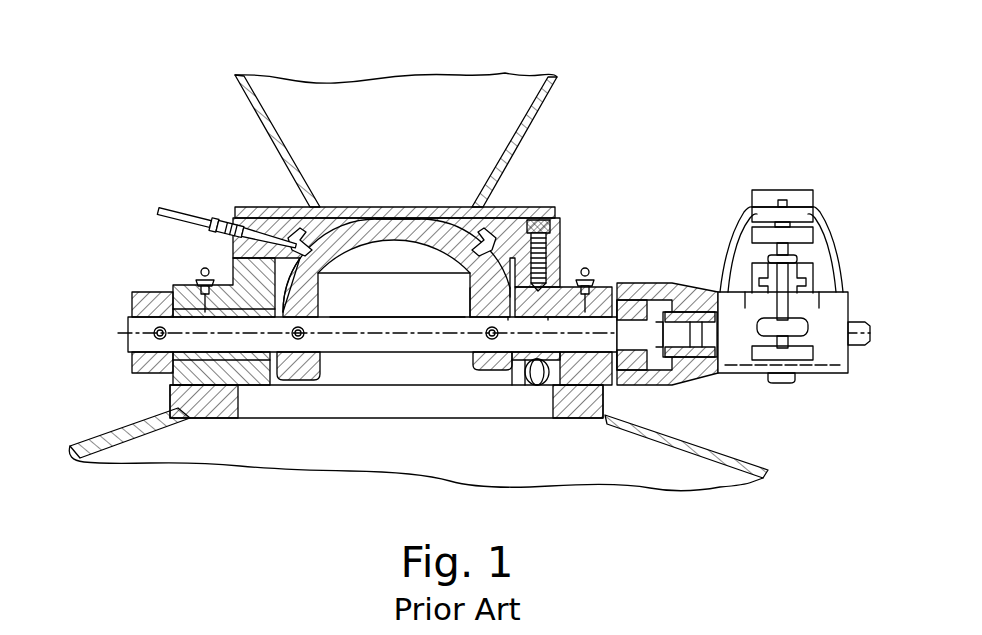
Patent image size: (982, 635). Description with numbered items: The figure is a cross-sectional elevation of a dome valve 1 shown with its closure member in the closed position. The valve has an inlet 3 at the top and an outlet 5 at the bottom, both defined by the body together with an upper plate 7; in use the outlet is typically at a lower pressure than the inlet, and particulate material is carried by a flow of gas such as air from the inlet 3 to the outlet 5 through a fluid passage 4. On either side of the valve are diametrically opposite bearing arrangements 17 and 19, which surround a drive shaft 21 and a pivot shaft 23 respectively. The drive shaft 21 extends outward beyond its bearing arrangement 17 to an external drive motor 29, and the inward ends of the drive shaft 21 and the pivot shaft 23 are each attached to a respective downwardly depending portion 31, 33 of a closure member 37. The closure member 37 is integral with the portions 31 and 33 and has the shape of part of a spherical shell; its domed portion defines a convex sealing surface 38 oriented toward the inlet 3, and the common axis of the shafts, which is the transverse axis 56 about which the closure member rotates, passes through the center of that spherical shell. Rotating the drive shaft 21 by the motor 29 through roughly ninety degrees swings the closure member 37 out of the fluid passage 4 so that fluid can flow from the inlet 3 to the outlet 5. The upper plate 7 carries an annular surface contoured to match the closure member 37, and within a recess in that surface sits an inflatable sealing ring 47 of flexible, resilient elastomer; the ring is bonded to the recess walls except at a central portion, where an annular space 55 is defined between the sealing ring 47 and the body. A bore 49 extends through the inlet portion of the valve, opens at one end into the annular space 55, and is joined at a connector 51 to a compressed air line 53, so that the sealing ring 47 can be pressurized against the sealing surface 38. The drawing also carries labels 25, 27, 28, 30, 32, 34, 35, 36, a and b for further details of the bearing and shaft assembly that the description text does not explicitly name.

The dome valve 1 is at (455, 279).
The inlet 3 is at (285, 108).
The fluid passage 4 is at (399, 352).
The outlet 5 is at (256, 121).
The upper plate 7 is at (565, 240).
The bearing arrangement 17 is at (608, 412).
The bearing arrangement 19 is at (242, 366).
The drive shaft 21 is at (490, 338).
The pivot shaft 23 is at (320, 338).
The seal 25 is at (546, 378).
The shaft bushing 27 is at (261, 368).
The bearing block 28 is at (528, 318).
The drive motor 29 is at (746, 370).
The spacer 30 is at (526, 360).
The downwardly depending portion 31 is at (476, 358).
The fastening bolt 32 is at (200, 290).
The downwardly depending portion 33 is at (320, 362).
The fastening bolt 34 is at (592, 290).
The housing wall 35 is at (320, 296).
The bearing block 36 is at (178, 320).
The closure member 37 is at (430, 234).
The convex sealing surface 38 is at (412, 219).
The inflatable sealing ring 47 is at (478, 250).
The bore 49 is at (272, 215).
The connector 51 is at (226, 204).
The compressed air line 53 is at (232, 198).
The annular space 55 is at (500, 250).
The transverse axis 56 is at (128, 333).
The point a is at (504, 332).
The point b is at (550, 318).